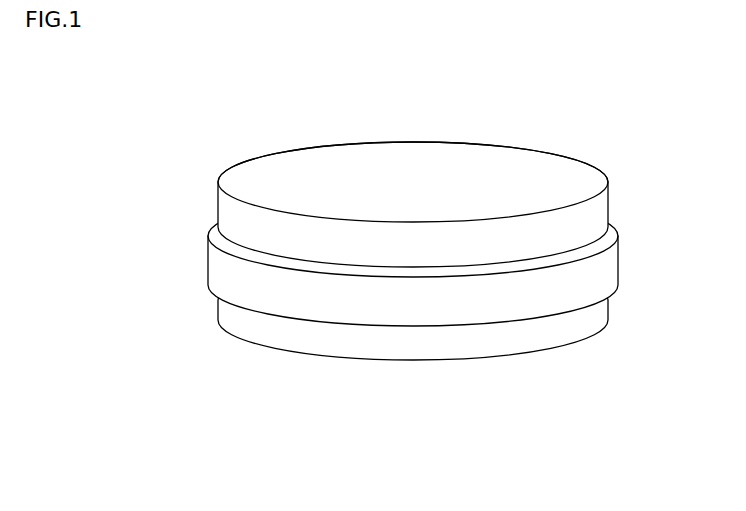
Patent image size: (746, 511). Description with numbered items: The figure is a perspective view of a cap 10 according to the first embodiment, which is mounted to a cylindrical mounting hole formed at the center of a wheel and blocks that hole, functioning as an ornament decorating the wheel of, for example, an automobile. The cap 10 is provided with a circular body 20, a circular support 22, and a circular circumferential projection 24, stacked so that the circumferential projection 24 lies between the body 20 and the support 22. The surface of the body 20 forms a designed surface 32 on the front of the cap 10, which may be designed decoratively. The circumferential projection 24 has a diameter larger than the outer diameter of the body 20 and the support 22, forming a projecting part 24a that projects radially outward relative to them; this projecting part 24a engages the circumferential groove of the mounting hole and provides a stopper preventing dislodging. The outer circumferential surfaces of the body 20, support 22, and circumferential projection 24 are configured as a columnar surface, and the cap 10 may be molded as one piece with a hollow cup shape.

The cap 10 is at (397, 268).
The body 20 is at (597, 213).
The support 22 is at (597, 317).
The circumferential projection 24 is at (603, 270).
The projecting part 24a is at (218, 243).
The designed surface 32 is at (469, 153).